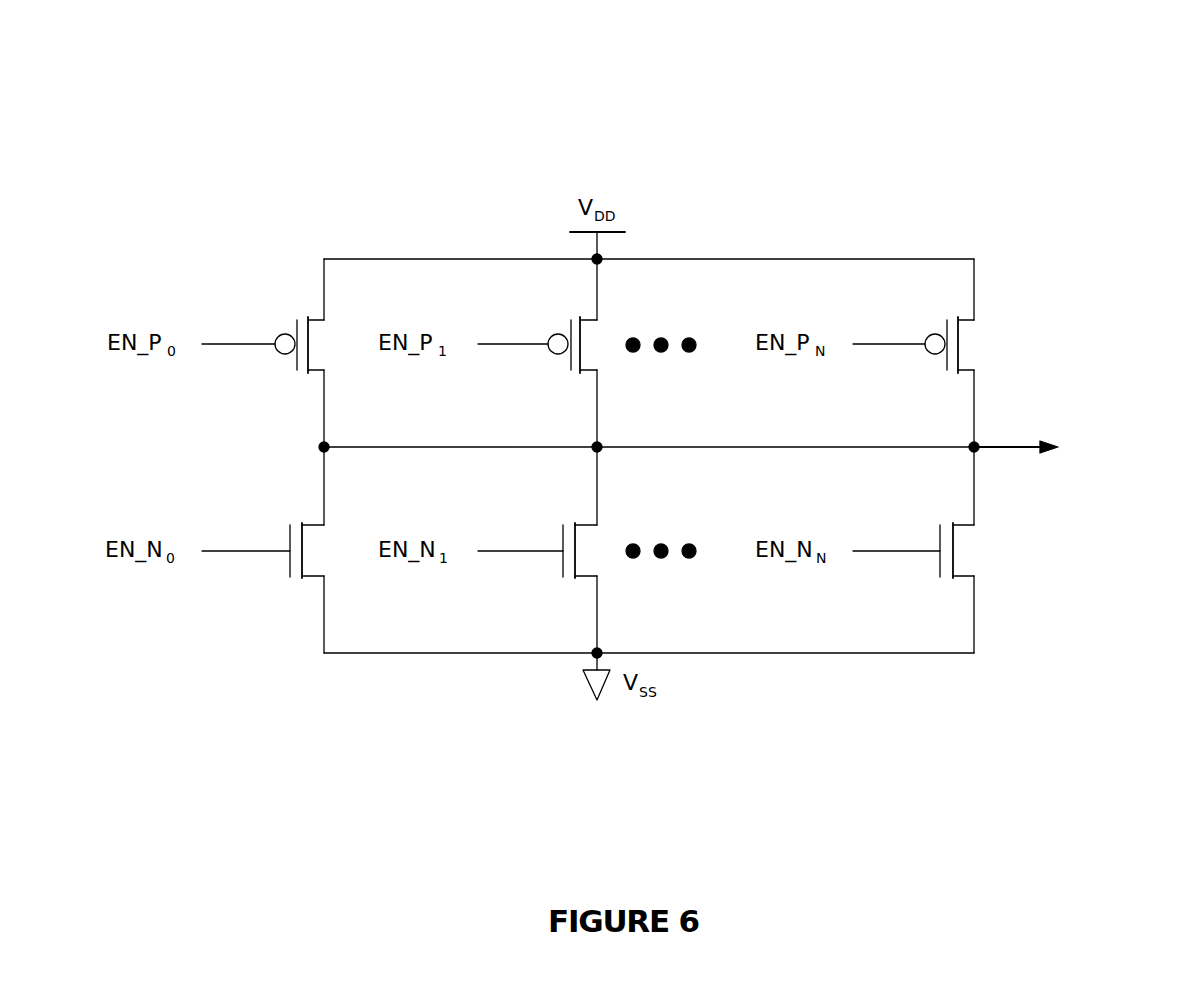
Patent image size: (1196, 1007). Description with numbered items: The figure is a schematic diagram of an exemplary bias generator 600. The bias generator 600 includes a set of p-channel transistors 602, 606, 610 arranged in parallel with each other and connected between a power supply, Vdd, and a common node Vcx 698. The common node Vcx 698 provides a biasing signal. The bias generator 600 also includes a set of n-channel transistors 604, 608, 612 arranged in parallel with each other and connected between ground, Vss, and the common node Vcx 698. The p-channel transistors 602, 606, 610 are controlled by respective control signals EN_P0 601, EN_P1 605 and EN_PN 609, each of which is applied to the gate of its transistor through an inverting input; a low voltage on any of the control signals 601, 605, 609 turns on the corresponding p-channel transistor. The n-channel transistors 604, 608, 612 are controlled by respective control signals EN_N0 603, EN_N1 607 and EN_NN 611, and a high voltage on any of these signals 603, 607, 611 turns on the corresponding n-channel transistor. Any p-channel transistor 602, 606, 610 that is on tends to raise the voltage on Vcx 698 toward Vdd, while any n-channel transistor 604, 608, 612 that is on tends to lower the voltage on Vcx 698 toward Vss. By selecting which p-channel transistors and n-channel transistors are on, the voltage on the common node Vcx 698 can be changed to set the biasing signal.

The bias generator 600 is at (1060, 122).
The control signal EN_P0 601 is at (240, 343).
The p-channel transistor 602 is at (296, 362).
The control signal EN_N0 603 is at (240, 550).
The n-channel transistor 604 is at (288, 567).
The control signal EN_P1 605 is at (513, 343).
The p-channel transistor 606 is at (569, 362).
The control signal EN_N1 607 is at (513, 550).
The n-channel transistor 608 is at (561, 567).
The control signal EN_PN 609 is at (890, 343).
The p-channel transistor 610 is at (946, 362).
The control signal EN_NN 611 is at (890, 550).
The n-channel transistor 612 is at (938, 567).
The common node Vcx 698 is at (1012, 445).